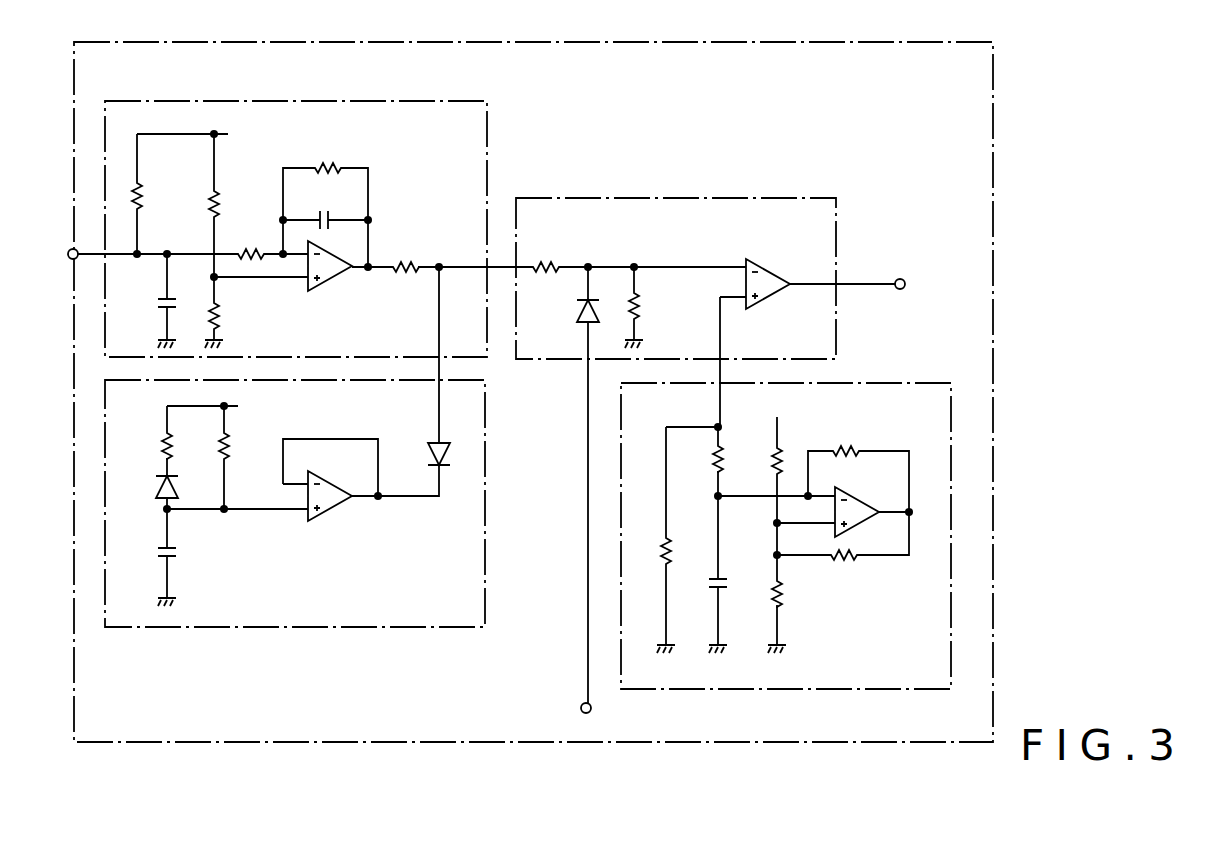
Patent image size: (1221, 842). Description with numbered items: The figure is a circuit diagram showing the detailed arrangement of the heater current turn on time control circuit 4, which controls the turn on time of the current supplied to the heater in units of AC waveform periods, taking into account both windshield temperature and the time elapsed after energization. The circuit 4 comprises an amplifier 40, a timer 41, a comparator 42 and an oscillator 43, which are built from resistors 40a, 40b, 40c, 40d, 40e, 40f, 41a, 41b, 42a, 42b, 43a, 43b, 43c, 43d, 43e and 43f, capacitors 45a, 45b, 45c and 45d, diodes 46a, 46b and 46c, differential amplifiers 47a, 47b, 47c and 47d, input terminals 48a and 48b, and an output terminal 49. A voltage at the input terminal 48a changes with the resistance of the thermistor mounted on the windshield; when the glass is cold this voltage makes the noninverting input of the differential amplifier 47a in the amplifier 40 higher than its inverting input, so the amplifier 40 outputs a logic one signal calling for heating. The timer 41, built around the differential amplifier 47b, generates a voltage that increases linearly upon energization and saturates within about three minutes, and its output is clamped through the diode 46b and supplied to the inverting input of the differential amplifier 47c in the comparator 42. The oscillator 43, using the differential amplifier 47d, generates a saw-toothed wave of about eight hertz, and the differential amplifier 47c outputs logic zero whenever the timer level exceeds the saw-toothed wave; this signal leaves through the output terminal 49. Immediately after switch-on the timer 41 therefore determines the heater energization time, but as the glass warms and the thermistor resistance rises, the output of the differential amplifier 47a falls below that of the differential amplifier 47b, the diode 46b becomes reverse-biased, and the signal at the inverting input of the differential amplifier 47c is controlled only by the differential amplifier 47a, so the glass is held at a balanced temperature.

The heater current turn on time control circuit 4 is at (993, 72).
The amplifier 40 is at (205, 100).
The resistor 40a is at (148, 192).
The resistor 40b is at (208, 194).
The resistor 40c is at (249, 247).
The resistor 40d is at (330, 178).
The resistor 40e is at (404, 262).
The resistor 40f is at (222, 308).
The timer 41 is at (180, 628).
The resistor 41a is at (164, 444).
The resistor 41b is at (230, 452).
The comparator 42 is at (645, 197).
The resistor 42a is at (550, 262).
The resistor 42b is at (645, 300).
The oscillator 43 is at (940, 355).
The resistor 43a is at (672, 546).
The resistor 43b is at (712, 460).
The resistor 43c is at (768, 465).
The resistor 43d is at (785, 592).
The resistor 43e is at (840, 565).
The resistor 43f is at (840, 445).
The capacitor 45a is at (160, 302).
The capacitor 45b is at (336, 216).
The capacitor 45c is at (178, 553).
The capacitor 45d is at (724, 590).
The diode 46a is at (158, 491).
The diode 46b is at (446, 440).
The diode 46c is at (577, 312).
The differential amplifier 47a is at (331, 284).
The differential amplifier 47b is at (336, 512).
The differential amplifier 47c is at (778, 272).
The differential amplifier 47d is at (859, 495).
The input terminal 48a is at (70, 249).
The input terminal 48b is at (578, 708).
The output terminal 49 is at (899, 278).